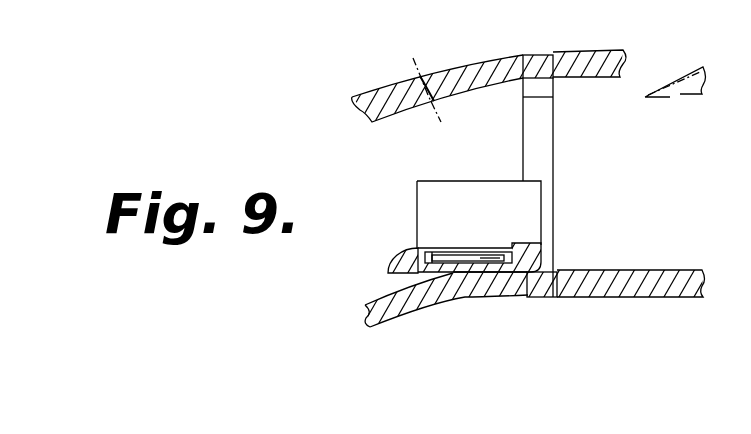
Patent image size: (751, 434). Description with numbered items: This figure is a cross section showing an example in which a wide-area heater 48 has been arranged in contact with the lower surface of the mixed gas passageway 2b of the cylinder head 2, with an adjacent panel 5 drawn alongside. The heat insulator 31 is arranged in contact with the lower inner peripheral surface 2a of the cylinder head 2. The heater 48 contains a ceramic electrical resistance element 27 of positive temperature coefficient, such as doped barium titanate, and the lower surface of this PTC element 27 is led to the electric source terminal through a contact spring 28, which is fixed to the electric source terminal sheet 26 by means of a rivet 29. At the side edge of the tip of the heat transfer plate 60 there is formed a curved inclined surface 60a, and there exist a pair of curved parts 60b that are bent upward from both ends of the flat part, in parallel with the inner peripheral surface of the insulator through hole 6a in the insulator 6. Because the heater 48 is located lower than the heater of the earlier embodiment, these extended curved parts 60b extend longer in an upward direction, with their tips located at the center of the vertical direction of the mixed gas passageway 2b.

The cylinder head 2 is at (355, 104).
The lower inner peripheral surface 2a is at (553, 258).
The mixed gas passageway 2b is at (420, 58).
The adjacent panel 5 is at (620, 84).
The insulator 6 is at (548, 55).
The insulator through hole 6a is at (548, 150).
The electric source terminal sheet 26 is at (505, 275).
The PTC element 27 is at (437, 255).
The contact spring 28 is at (492, 258).
The rivet 29 is at (510, 243).
The heat insulator 31 is at (470, 275).
The heater 48 is at (475, 181).
The heat transfer plate 60 is at (470, 257).
The curved inclined surface 60a is at (395, 258).
The curved parts 60b is at (417, 197).